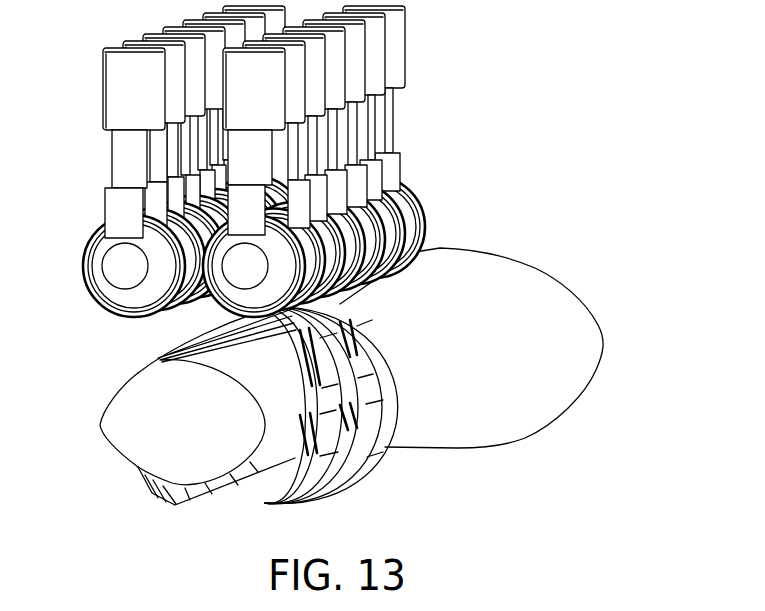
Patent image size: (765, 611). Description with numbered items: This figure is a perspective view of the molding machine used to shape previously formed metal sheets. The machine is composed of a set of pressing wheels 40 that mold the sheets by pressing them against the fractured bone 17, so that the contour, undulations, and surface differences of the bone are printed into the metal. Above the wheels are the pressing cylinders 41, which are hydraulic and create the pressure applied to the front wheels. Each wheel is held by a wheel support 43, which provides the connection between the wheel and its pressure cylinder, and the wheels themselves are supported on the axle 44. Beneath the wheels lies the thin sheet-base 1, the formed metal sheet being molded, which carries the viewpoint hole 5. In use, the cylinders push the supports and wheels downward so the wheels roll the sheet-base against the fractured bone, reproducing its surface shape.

The thin sheet-base 1 is at (177, 506).
The viewpoint hole 5 is at (383, 446).
The fractured bone 17 is at (604, 336).
The pressing wheels 40 is at (425, 212).
The pressing cylinders 41 is at (362, 61).
The wheel supports 43 is at (388, 154).
The axle 44 is at (120, 268).